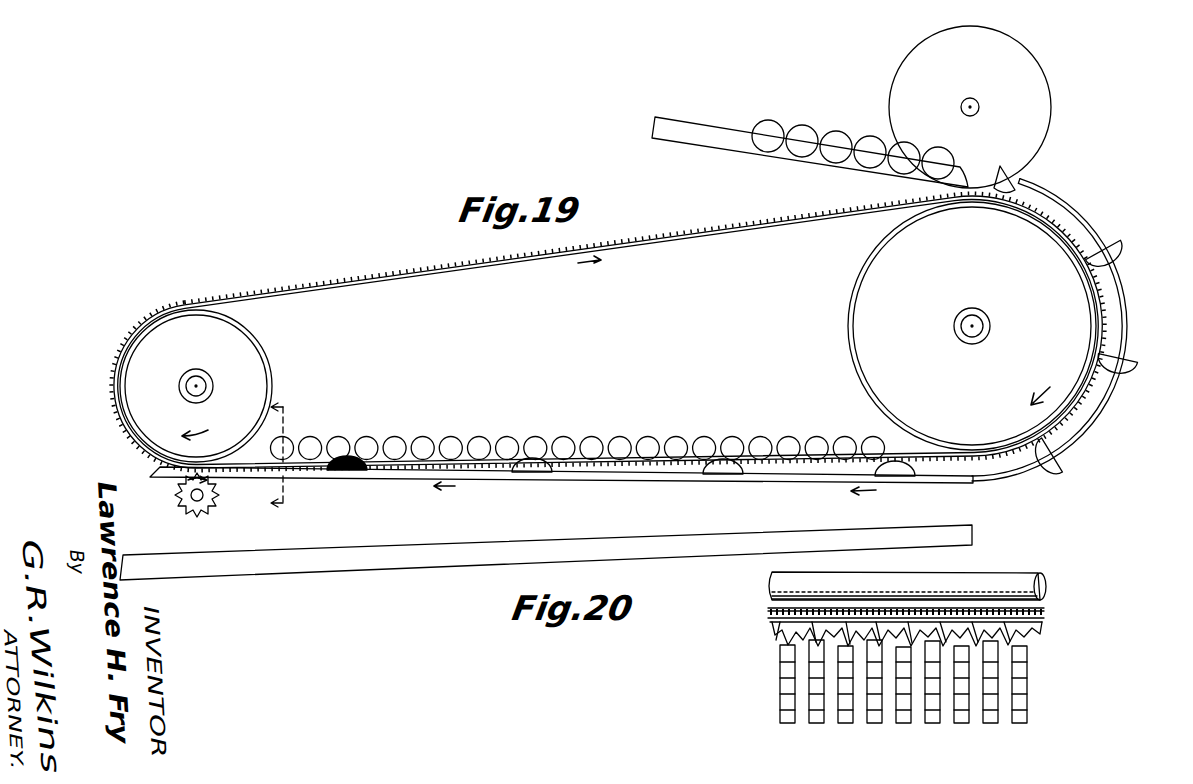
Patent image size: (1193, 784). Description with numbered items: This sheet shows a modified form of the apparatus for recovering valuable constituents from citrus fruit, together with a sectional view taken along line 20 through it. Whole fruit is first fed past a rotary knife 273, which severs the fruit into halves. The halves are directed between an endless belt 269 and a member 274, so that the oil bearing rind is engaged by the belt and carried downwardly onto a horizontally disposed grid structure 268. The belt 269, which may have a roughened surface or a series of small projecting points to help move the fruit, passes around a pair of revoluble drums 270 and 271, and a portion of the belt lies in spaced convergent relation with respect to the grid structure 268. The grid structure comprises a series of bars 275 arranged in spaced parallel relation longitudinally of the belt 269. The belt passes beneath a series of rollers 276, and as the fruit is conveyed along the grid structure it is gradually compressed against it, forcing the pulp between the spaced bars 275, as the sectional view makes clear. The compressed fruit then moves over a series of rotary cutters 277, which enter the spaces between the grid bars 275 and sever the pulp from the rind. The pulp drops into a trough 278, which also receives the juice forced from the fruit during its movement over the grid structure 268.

In FIG. 19, the section line 20 is at (287, 461).
In FIG. 19, the grid structure 268 is at (619, 486).
In FIG. 19, the endless belt 269 is at (410, 281).
In FIG. 20, the endless belt 269 is at (1044, 616).
In FIG. 19, the revoluble drum 270 is at (273, 364).
In FIG. 19, the revoluble drum 271 is at (848, 327).
In FIG. 19, the rotary knife 273 is at (1035, 120).
In FIG. 19, the member 274 is at (1128, 318).
In FIG. 19, the bars 275 is at (688, 479).
In FIG. 20, the bars 275 is at (786, 644).
In FIG. 19, the rollers 276 is at (580, 444).
In FIG. 20, the rollers 276 is at (1026, 580).
In FIG. 19, the rotary cutters 277 is at (203, 512).
In FIG. 20, the rotary cutters 277 is at (868, 718).
In FIG. 19, the trough 278 is at (471, 548).